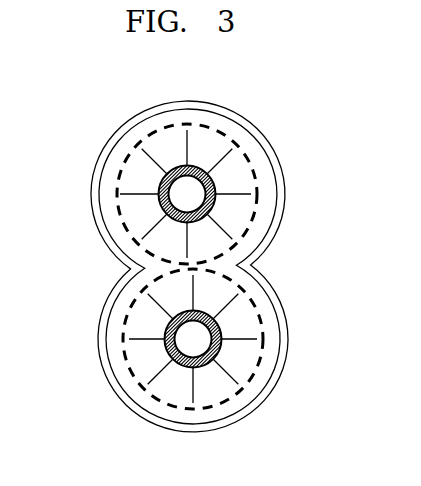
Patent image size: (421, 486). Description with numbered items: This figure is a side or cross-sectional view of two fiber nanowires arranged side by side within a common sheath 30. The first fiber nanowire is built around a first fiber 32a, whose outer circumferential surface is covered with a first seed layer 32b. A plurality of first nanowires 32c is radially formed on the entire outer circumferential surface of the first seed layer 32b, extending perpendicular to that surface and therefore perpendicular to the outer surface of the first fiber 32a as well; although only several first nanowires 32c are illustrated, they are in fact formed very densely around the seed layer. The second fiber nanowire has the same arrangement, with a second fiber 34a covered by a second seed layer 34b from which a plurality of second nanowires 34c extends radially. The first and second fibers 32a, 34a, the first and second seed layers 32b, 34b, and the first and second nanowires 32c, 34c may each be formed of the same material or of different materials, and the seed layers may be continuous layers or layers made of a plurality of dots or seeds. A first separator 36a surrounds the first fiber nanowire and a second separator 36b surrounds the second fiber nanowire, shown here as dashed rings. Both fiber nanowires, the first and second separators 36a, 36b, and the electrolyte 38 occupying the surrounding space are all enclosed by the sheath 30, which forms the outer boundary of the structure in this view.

The sheath 30 is at (243, 127).
The first fiber 32a is at (197, 343).
The first seed layer 32b is at (198, 357).
The first nanowires 32c is at (135, 340).
The second fiber 34a is at (196, 194).
The second seed layer 34b is at (217, 182).
The second nanowires 34c is at (148, 162).
The first separator 36a is at (263, 316).
The second separator 36b is at (123, 229).
The electrolyte 38 is at (162, 143).